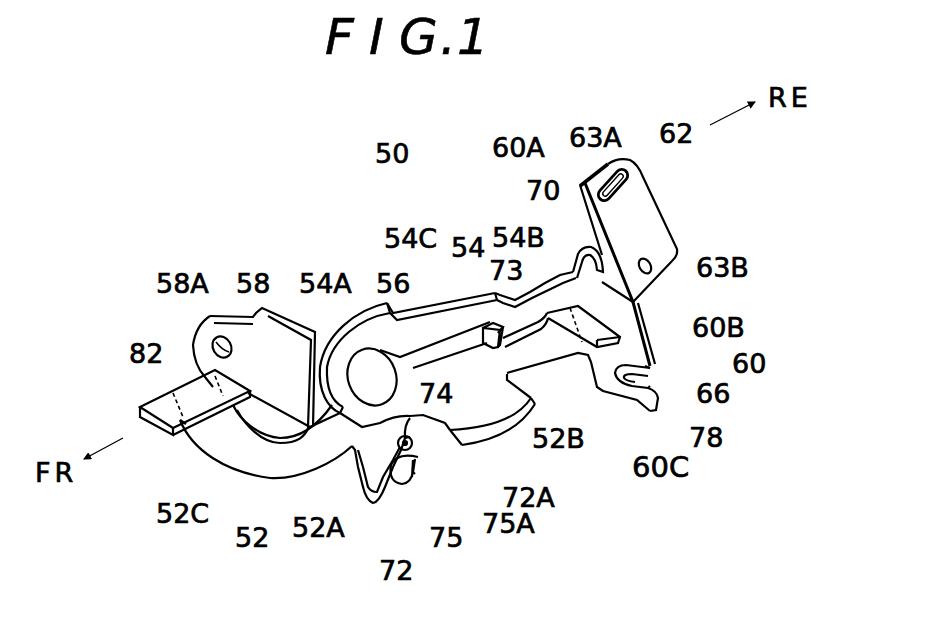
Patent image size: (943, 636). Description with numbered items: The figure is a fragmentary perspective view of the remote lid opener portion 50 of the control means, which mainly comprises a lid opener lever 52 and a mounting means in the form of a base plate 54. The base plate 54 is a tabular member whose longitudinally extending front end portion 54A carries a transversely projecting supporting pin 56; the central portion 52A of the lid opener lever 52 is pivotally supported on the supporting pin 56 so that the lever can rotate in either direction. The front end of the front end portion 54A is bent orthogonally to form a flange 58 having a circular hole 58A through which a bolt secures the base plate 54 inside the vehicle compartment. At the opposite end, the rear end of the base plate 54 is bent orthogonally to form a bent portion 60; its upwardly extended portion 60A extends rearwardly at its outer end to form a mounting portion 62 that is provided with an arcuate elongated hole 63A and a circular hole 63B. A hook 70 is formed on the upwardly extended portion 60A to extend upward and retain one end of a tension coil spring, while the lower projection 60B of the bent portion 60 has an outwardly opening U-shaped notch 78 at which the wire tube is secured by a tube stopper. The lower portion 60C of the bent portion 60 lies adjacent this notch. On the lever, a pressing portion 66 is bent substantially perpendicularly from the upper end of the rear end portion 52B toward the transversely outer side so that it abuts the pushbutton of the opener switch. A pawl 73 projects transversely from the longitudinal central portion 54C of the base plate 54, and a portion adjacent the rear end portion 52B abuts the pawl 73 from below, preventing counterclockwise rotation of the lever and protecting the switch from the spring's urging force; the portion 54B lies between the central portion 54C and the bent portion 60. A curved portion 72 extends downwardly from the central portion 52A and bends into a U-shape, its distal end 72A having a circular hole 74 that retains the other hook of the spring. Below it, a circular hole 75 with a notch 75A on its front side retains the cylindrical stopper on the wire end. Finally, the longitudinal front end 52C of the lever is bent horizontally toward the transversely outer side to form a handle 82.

The remote lid opener portion 50 is at (404, 199).
The lid opener lever 52 is at (267, 483).
The central portion of the lid opener lever 52A is at (360, 424).
The rear end portion of the lid opener lever 52B is at (547, 335).
The longitudinal front end of the lid opener lever 52C is at (206, 437).
The base plate 54 is at (467, 338).
The longitudinal front end portion of the base plate 54A is at (340, 327).
The bent portion 54B is at (540, 288).
The longitudinal central portion of the base plate 54C is at (470, 291).
The supporting pin 56 is at (380, 365).
The flange 58 is at (267, 343).
The circular hole 58A is at (213, 337).
The bent portion 60 is at (660, 353).
The upwardly extended portion 60A is at (580, 195).
The lower projection 60B is at (640, 304).
The lower hook portion 60C is at (640, 410).
The mounting portion 62 is at (640, 172).
The arcuate elongated hole 63A is at (606, 177).
The circular hole 63B is at (660, 262).
The pressing portion 66 is at (660, 366).
The hook 70 is at (577, 248).
The curved portion 72 is at (392, 506).
The distal end of the curved portion 72A is at (420, 434).
The pawl 73 is at (498, 320).
The circular hole 74 is at (410, 437).
The circular hole 75 is at (416, 482).
The notch 75A is at (419, 453).
The U-shaped notch 78 is at (645, 390).
The handle 82 is at (190, 393).